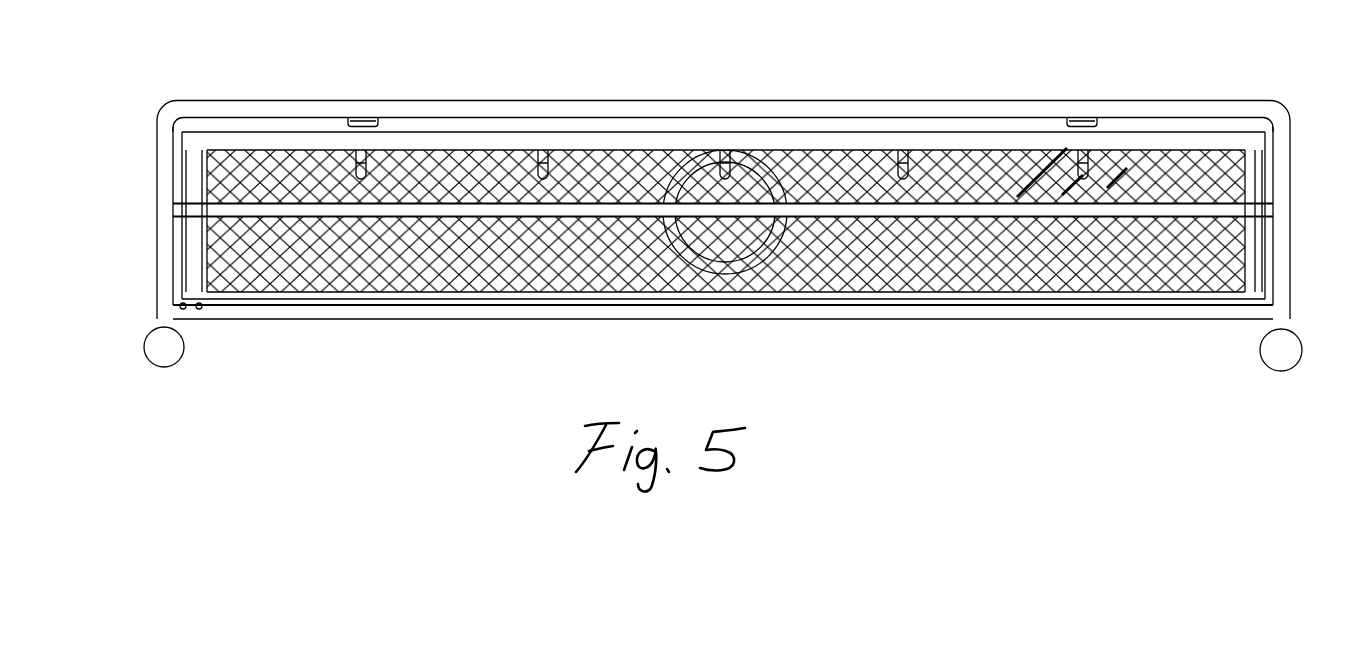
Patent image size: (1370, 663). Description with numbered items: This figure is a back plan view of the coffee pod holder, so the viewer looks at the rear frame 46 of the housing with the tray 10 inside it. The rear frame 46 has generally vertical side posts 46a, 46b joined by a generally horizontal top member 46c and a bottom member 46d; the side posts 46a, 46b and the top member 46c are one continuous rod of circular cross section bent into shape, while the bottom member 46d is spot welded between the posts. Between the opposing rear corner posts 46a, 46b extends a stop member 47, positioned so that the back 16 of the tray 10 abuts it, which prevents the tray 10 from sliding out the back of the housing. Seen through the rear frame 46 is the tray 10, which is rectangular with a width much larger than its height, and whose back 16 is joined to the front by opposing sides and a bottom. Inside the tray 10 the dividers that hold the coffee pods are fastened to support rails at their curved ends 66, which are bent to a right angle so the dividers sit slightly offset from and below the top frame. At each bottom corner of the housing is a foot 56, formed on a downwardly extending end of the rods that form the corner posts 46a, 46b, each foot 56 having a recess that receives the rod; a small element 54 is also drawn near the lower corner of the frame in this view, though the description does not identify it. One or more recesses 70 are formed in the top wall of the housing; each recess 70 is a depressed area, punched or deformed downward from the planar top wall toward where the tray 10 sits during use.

The tray 10 is at (1000, 268).
The back 16 is at (390, 262).
The rear frame 46 is at (744, 99).
The side post 46a is at (1289, 142).
The side post 46b is at (150, 150).
The top member 46c is at (566, 103).
The bottom member 46d is at (513, 320).
The stop member 47 is at (872, 213).
The feet 54 is at (199, 310).
The foot 56 is at (172, 365).
The ends of dividers 66 is at (903, 165).
The recess 70 is at (378, 122).